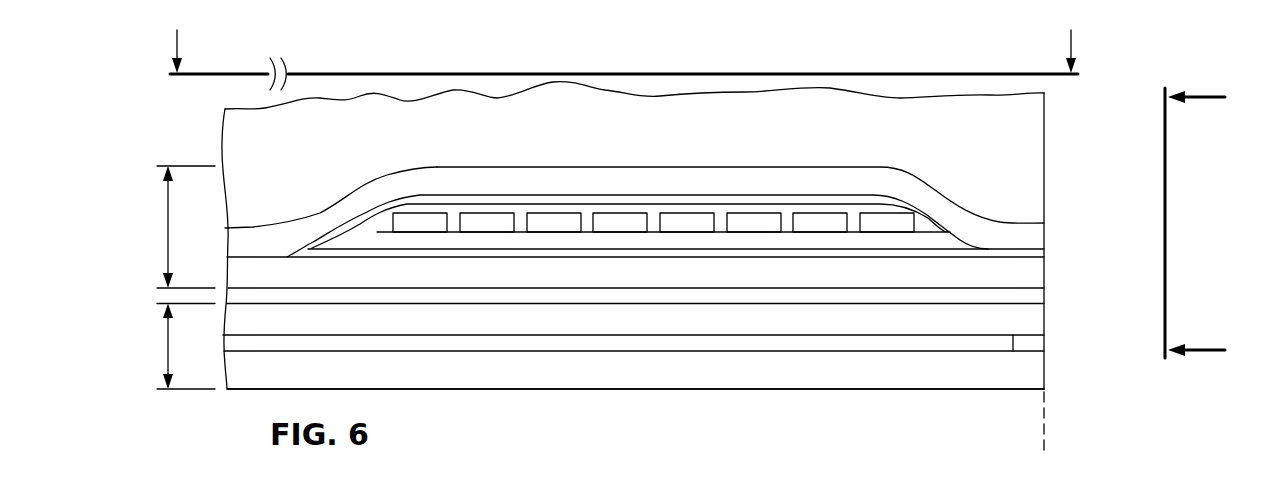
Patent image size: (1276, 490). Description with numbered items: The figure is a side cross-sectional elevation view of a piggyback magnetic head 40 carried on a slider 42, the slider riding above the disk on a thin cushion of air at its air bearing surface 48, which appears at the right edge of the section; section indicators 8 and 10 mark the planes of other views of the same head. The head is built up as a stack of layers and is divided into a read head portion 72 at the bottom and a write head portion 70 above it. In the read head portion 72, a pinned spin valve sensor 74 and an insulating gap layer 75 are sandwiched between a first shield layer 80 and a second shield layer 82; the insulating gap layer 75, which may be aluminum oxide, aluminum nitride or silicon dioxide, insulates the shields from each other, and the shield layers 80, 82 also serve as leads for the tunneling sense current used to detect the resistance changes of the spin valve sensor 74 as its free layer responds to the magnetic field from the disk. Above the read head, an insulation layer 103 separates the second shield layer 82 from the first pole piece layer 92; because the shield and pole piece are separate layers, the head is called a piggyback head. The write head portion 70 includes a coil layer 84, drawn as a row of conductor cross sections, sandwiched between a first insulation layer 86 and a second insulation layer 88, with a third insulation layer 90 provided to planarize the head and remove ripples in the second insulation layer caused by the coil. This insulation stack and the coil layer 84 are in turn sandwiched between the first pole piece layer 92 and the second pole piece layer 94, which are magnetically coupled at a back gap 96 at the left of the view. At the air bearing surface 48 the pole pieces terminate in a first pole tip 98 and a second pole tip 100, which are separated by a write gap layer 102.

The section line 8- 8 is at (1206, 224).
The section line 10- 10 is at (623, 58).
The magnetic head 40 is at (203, 118).
The slider 42 is at (1028, 123).
The air bearing surface 48 is at (1044, 440).
The write head portion 70 is at (168, 233).
The read head portion 72 is at (168, 348).
The spin valve sensor 74 is at (1037, 343).
The insulating gap layer 75 is at (447, 344).
The first shield layer 80 is at (808, 375).
The second shield layer 82 is at (505, 298).
The coil layer 84 is at (687, 218).
The first insulation layer 86 is at (608, 242).
The second insulation layer 88 is at (928, 225).
The third insulation layer 90 is at (460, 195).
The first pole piece layer 92 is at (558, 278).
The second pole piece layer 94 is at (824, 182).
The back gap 96 is at (267, 257).
The first pole tip 98 is at (1043, 320).
The second pole tip 100 is at (1037, 232).
The write gap layer 102 is at (1040, 257).
The insulation layer 103 is at (867, 297).